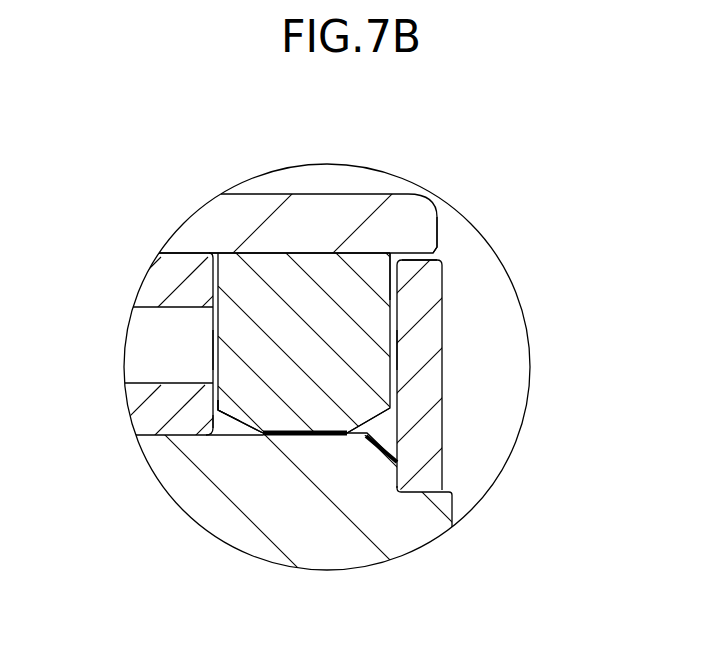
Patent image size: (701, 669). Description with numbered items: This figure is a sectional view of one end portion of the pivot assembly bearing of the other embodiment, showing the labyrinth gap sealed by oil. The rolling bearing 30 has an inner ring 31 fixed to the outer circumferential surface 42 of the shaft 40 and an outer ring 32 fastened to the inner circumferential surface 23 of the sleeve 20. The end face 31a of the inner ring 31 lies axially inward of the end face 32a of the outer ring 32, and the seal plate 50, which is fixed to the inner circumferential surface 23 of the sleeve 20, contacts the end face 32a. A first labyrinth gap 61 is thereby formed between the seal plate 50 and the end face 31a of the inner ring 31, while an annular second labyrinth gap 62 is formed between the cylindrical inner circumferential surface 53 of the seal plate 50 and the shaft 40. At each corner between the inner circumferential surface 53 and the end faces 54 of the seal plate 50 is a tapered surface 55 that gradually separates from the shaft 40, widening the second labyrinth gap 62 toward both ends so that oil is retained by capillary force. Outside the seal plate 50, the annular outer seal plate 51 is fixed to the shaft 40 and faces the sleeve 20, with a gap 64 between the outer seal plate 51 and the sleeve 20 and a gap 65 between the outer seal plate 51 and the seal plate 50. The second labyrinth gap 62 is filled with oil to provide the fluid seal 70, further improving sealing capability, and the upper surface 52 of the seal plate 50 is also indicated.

The sleeve 20 is at (311, 191).
The inner circumferential surface 23 is at (397, 283).
The rolling bearing 30 is at (184, 251).
The inner ring 31 is at (157, 402).
The end face 31a is at (221, 405).
The outer ring 32 is at (153, 292).
The end face 32a is at (219, 283).
The shaft 40 is at (458, 507).
The outer circumferential surface 42 is at (217, 415).
The seal plate 50 is at (365, 385).
The outer seal plate 51 is at (443, 325).
The upper surface 52 is at (277, 253).
The inner circumferential surface 53 is at (333, 437).
The end faces 54 is at (217, 352).
The tapered surface 55 is at (360, 427).
The first labyrinth gap 61 is at (220, 425).
The second labyrinth gap 62 is at (398, 437).
The gap 64 is at (438, 251).
The gap 65 is at (386, 257).
The fluid seal 70 is at (287, 436).